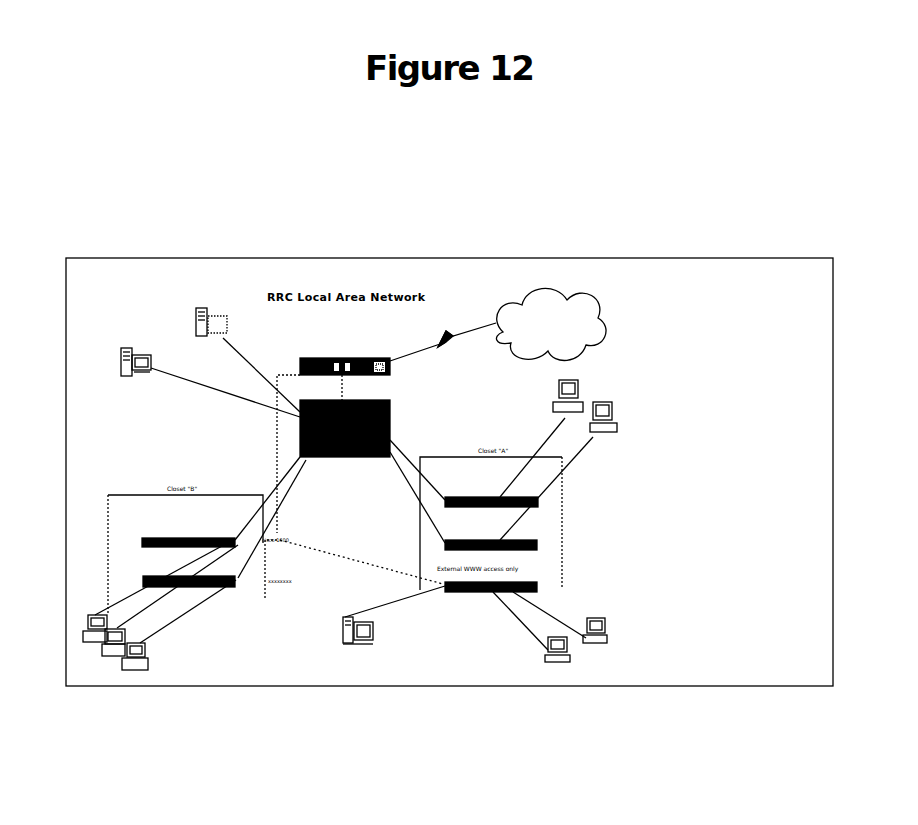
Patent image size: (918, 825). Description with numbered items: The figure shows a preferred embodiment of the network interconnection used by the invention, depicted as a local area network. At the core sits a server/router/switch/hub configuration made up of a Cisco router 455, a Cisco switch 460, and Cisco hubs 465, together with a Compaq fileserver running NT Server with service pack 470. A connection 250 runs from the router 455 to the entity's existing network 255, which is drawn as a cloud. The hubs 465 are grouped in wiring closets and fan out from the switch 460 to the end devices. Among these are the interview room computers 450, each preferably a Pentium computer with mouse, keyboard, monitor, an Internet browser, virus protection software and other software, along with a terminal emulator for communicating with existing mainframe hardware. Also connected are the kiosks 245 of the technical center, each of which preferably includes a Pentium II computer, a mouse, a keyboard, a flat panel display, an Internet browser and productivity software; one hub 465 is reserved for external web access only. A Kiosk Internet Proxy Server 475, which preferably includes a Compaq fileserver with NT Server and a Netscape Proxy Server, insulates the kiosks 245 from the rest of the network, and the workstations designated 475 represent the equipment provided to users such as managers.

The Compaq 2500 Fileserver with NT Server 470 is at (137, 341).
The connection to existing network 250 is at (438, 334).
The entity's existing network 255 is at (571, 306).
The Cisco 4500 Router 455 is at (395, 366).
The Cisco 5000 Switch 460 is at (392, 423).
The interview room computer 450 is at (602, 385).
The Cisco 1924 Hubs 465 is at (197, 535).
The kiosk 245 is at (593, 665).
The Kiosk Internet Proxy Server 475 is at (95, 643).